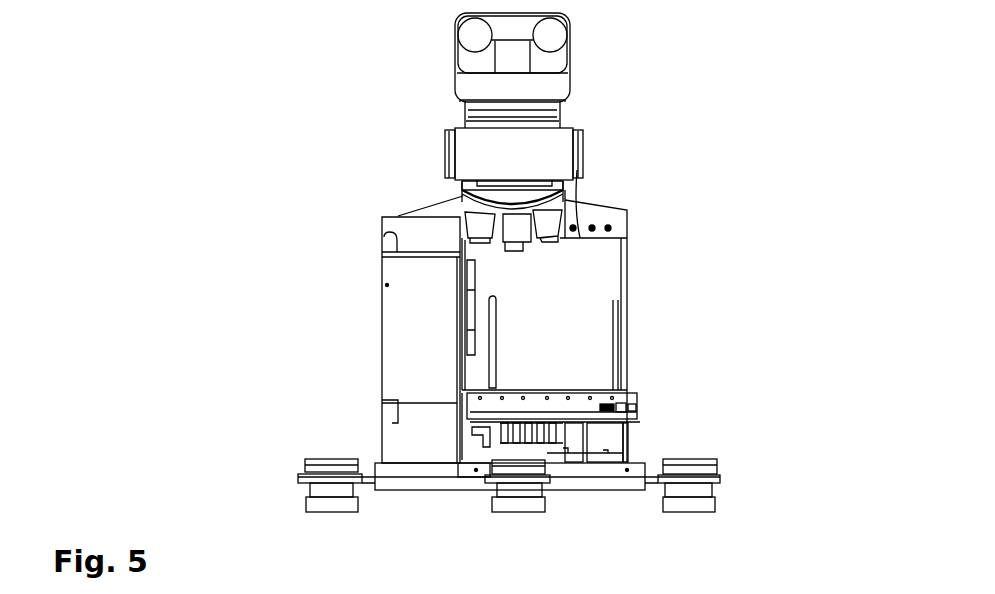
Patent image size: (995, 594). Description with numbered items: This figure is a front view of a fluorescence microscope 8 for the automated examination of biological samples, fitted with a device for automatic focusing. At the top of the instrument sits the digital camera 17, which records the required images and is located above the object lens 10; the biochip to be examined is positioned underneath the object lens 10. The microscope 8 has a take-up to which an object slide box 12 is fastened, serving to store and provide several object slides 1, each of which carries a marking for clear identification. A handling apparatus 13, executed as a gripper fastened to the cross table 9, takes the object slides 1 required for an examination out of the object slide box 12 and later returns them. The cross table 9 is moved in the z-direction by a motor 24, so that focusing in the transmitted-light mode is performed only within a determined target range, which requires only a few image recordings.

The fluorescence microscope 8 is at (665, 70).
The digital camera 17 is at (427, 132).
The object lens 10 is at (518, 223).
The object slide 1 is at (485, 385).
The object slide box 12 is at (405, 322).
The handling apparatus 13 is at (513, 387).
The cross table 9 is at (610, 394).
The motor 24 is at (573, 433).